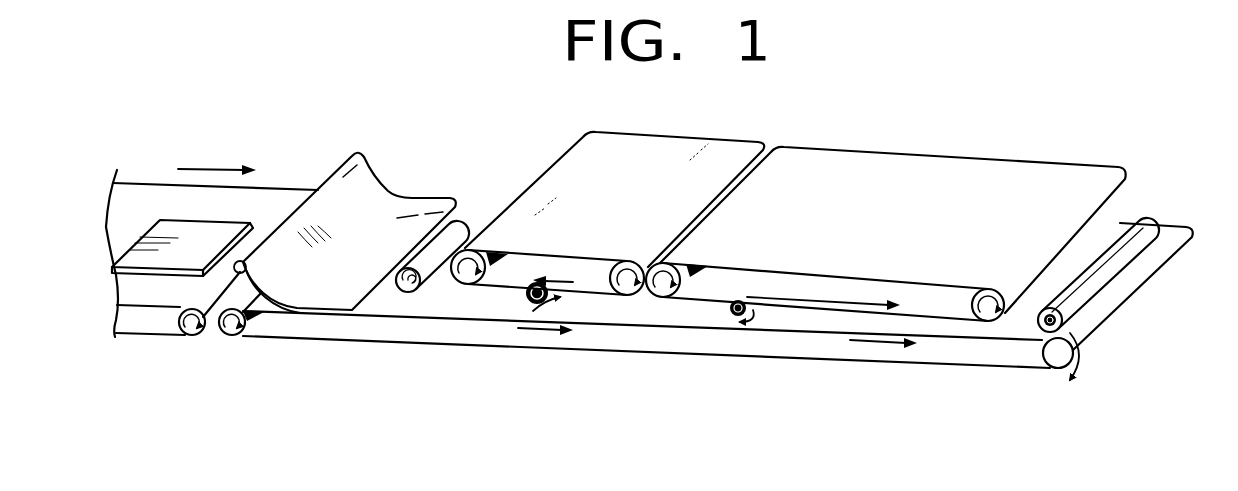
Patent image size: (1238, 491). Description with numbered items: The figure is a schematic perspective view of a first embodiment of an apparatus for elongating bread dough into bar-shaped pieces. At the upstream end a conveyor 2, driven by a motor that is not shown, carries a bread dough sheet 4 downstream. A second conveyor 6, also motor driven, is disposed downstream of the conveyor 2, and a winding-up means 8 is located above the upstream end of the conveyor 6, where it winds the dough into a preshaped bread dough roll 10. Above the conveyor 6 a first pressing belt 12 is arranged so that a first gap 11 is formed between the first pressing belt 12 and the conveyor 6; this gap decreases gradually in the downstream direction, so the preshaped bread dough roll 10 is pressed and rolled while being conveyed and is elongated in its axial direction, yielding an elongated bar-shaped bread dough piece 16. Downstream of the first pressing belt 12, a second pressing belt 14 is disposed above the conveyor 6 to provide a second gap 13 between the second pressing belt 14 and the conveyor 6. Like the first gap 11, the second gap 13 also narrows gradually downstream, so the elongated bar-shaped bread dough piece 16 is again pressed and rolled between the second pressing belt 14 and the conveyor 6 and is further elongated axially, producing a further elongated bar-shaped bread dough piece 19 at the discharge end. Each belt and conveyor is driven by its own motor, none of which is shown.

The conveyor 2 is at (283, 189).
The bread dough sheet 4 is at (175, 227).
The conveyor 6 is at (300, 340).
The winding-up means 8 is at (380, 176).
The preshaped bread dough roll 10 is at (458, 233).
The first gap 11 is at (472, 305).
The first pressing belt 12 is at (550, 177).
The second gap 13 is at (700, 314).
The second pressing belt 14 is at (1010, 173).
The elongated bar-shaped bread dough piece 16 is at (722, 314).
The further elongated bar-shaped bread dough piece 19 is at (1103, 272).